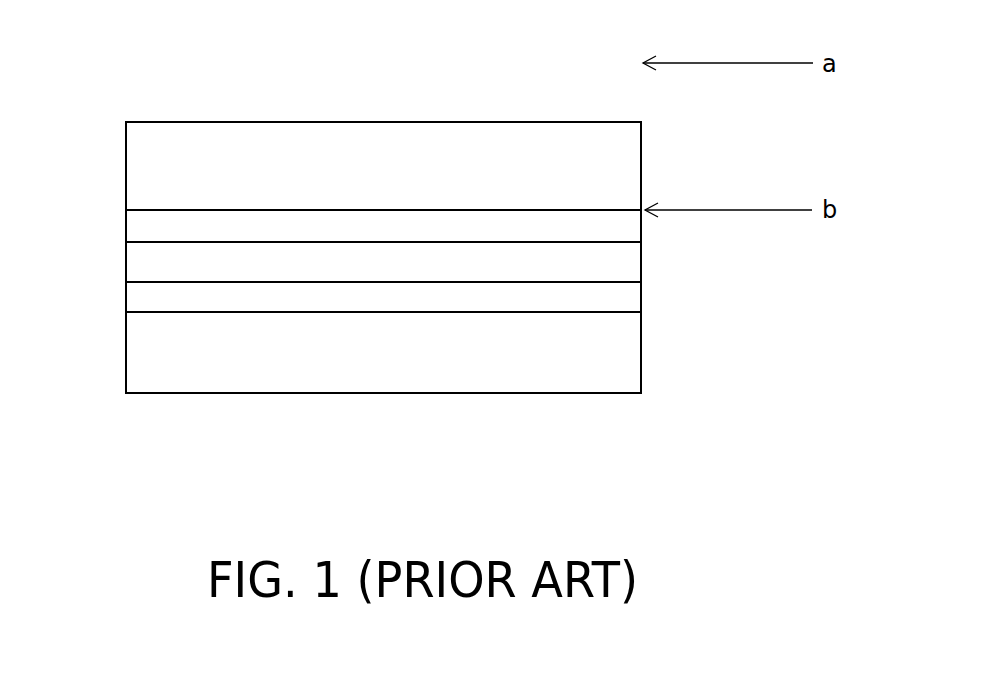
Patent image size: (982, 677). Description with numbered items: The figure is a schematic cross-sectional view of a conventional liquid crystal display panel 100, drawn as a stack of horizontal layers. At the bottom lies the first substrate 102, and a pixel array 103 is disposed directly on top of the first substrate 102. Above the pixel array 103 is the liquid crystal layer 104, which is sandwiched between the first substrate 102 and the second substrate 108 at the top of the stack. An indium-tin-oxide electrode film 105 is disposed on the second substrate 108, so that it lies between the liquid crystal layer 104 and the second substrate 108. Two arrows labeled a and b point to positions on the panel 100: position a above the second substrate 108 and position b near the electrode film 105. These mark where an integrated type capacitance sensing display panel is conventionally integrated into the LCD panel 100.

The LCD panel 100 is at (772, 459).
The first substrate 102 is at (630, 355).
The pixel array 103 is at (630, 298).
The liquid crystal layer 104 is at (630, 267).
The indium-tin-oxide electrode film 105 is at (137, 232).
The second substrate 108 is at (137, 184).